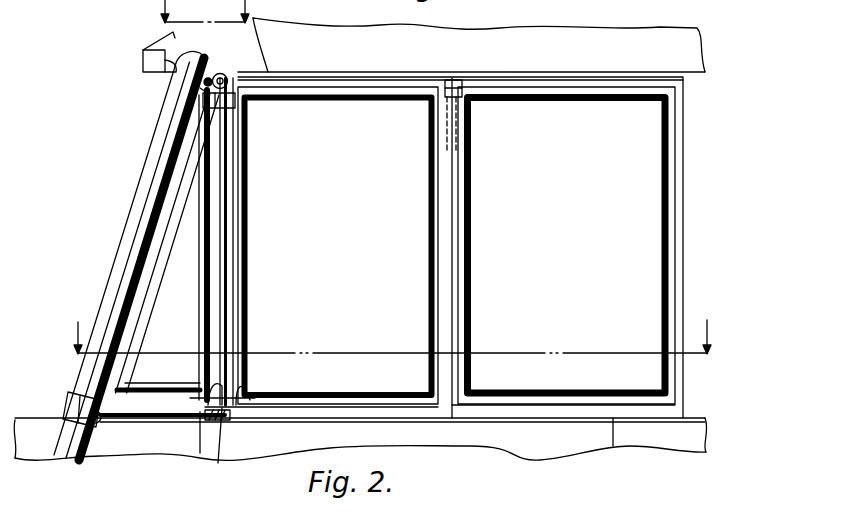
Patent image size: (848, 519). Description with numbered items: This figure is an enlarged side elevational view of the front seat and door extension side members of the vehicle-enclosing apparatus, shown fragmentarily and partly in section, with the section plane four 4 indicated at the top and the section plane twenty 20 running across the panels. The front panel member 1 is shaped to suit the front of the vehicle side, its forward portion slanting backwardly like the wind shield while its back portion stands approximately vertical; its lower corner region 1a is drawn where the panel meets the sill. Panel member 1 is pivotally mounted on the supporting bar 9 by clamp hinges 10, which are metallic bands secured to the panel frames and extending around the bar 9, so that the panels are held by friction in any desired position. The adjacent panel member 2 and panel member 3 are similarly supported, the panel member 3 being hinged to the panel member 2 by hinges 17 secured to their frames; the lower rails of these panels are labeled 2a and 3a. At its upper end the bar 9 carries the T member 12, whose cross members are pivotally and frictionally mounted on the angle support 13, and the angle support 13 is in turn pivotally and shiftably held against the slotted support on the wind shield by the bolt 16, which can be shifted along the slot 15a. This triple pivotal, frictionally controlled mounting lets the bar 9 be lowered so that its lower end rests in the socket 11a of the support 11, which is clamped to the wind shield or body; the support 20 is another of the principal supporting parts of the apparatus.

The panel member 1 is at (136, 256).
The sash hinge pin 1a is at (113, 382).
The panel member 2 is at (338, 245).
The bottom rail of sash 2 2a is at (387, 402).
The panel member 3 is at (183, 398).
The bottom rail of sash 3 3a is at (556, 408).
The section line 4- 4 is at (194, 12).
The supporting bar 9 is at (448, 86).
The clamp hinges 10 is at (222, 100).
The support 11 is at (172, 421).
The socket 11a is at (224, 450).
The T member 12 is at (203, 88).
The angle support 13 is at (205, 80).
The slot 15a is at (200, 78).
The bolt 16 is at (203, 93).
The hinges 17 is at (458, 92).
The support 20 is at (388, 340).